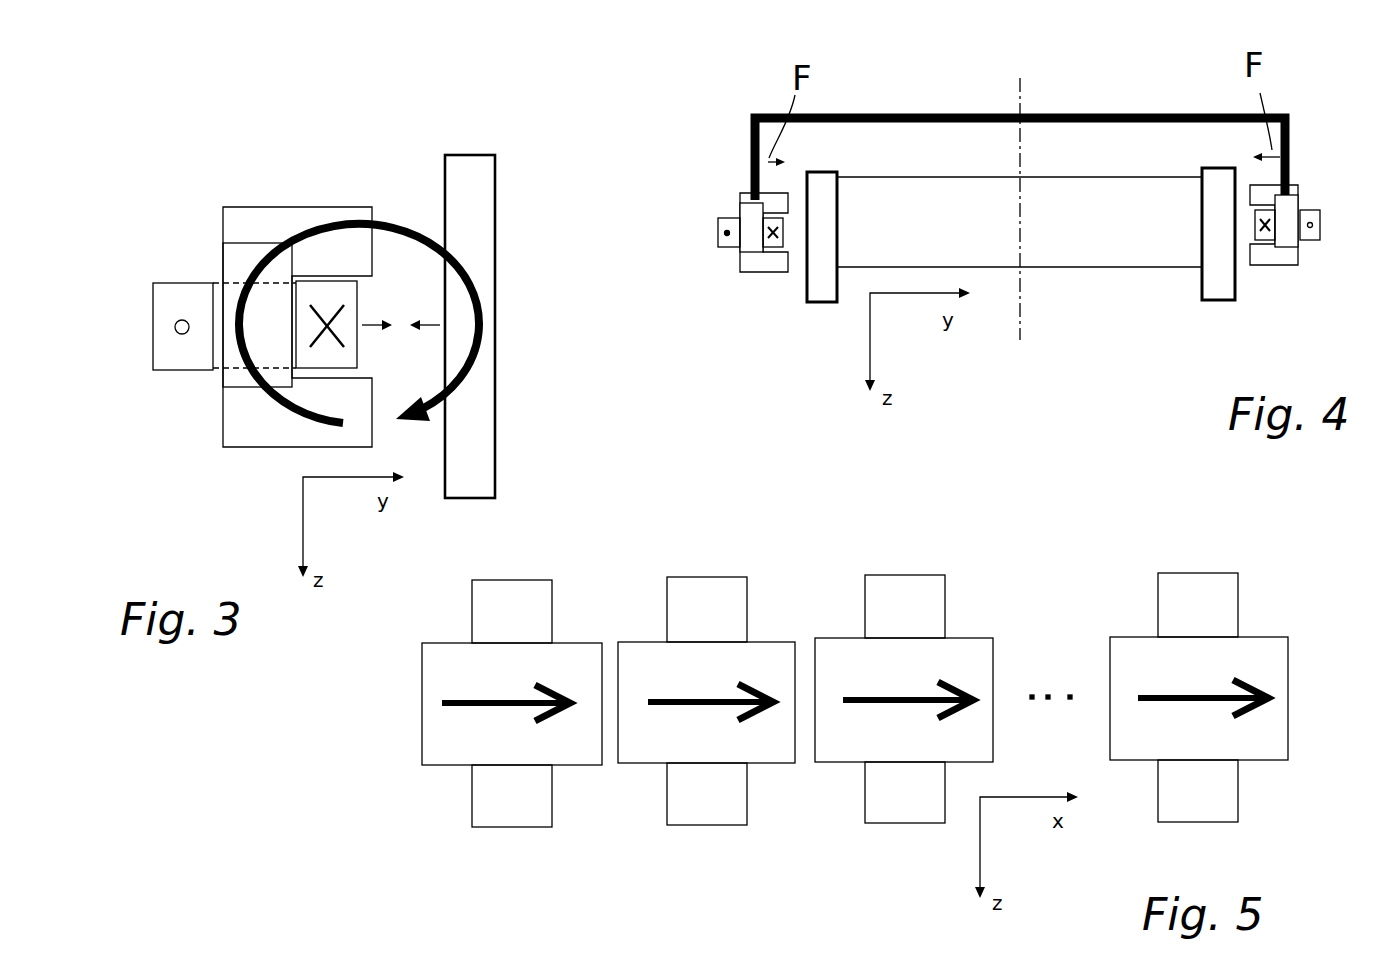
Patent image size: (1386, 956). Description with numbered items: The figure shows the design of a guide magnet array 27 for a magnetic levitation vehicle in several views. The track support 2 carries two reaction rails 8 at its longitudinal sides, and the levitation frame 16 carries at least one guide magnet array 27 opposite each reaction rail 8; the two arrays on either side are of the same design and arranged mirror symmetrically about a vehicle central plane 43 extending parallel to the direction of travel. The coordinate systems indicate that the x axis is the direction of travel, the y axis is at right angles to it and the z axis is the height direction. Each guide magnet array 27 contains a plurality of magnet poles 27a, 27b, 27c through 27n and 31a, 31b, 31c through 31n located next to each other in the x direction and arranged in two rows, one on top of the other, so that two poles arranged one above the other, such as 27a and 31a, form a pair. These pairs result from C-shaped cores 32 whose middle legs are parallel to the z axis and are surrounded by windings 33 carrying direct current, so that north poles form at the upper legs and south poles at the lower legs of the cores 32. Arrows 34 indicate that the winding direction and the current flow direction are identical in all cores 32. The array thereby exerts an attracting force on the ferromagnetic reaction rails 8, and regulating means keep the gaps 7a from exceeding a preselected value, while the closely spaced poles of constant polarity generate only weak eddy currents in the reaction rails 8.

In FIG. 4, the track support 2 is at (1085, 240).
In FIG. 3, the gap 7a is at (400, 317).
In FIG. 4, the gap 7a is at (795, 233).
In FIG. 3, the reaction rail 8 is at (483, 195).
In FIG. 4, the reaction rail 8 is at (820, 293).
In FIG. 4, the levitation frame 16 is at (957, 115).
In FIG. 3, the guide magnet array 27 is at (311, 341).
In FIG. 4, the guide magnet array 27 is at (1007, 300).
In FIG. 3, the magnet pole 27a is at (375, 210).
In FIG. 5, the magnet pole 27a is at (463, 699).
In FIG. 5, the magnet pole 27b is at (704, 704).
In FIG. 5, the magnet pole 27c is at (923, 707).
In FIG. 5, the magnet pole 27n is at (1216, 678).
In FIG. 3, the magnet pole 31a is at (375, 407).
In FIG. 5, the magnet pole 31a is at (480, 810).
In FIG. 5, the magnet pole 31b is at (685, 797).
In FIG. 5, the magnet pole 31c is at (880, 795).
In FIG. 5, the magnet pole 31n is at (1227, 800).
In FIG. 3, the C-shaped core 32 is at (242, 425).
In FIG. 4, the C-shaped core 32 is at (743, 200).
In FIG. 5, the C-shaped core 32 is at (462, 623).
In FIG. 3, the winding 33 is at (313, 297).
In FIG. 4, the winding 33 is at (723, 247).
In FIG. 5, the winding 33 is at (437, 743).
In FIG. 5, the arrow 34 is at (898, 693).
In FIG. 4, the vehicle central plane 43 is at (1027, 112).